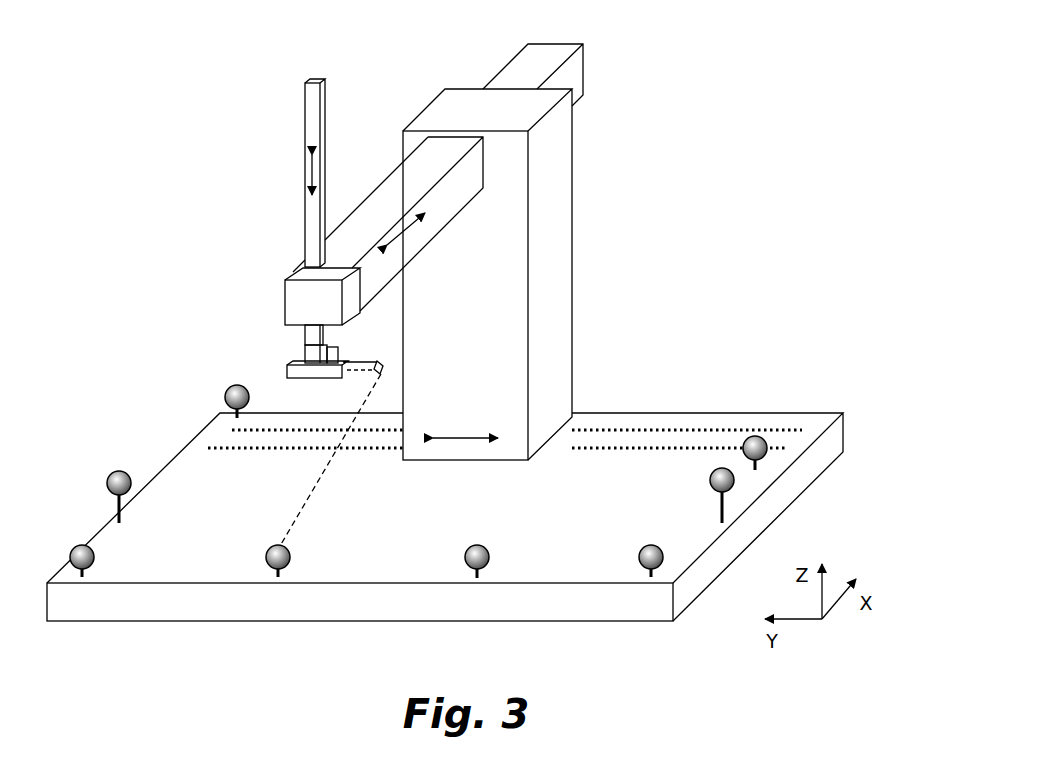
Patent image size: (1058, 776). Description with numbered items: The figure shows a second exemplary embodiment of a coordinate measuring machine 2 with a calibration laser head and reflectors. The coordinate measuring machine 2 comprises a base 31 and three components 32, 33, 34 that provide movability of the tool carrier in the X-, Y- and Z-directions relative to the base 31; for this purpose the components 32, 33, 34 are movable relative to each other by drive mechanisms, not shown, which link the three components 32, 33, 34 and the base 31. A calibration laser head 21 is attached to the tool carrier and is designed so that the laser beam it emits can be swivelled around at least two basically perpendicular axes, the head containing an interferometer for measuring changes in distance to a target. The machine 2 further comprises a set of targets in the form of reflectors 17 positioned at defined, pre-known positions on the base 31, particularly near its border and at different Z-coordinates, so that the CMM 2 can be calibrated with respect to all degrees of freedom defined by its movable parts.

The coordinate measuring machine 2 is at (705, 65).
The reflectors 17 is at (278, 555).
The calibration laser head 21 is at (302, 372).
The base 31 is at (180, 468).
The component for providing movability 32 is at (563, 308).
The component for providing movability 33 is at (520, 67).
The component for providing movability 34 is at (308, 136).